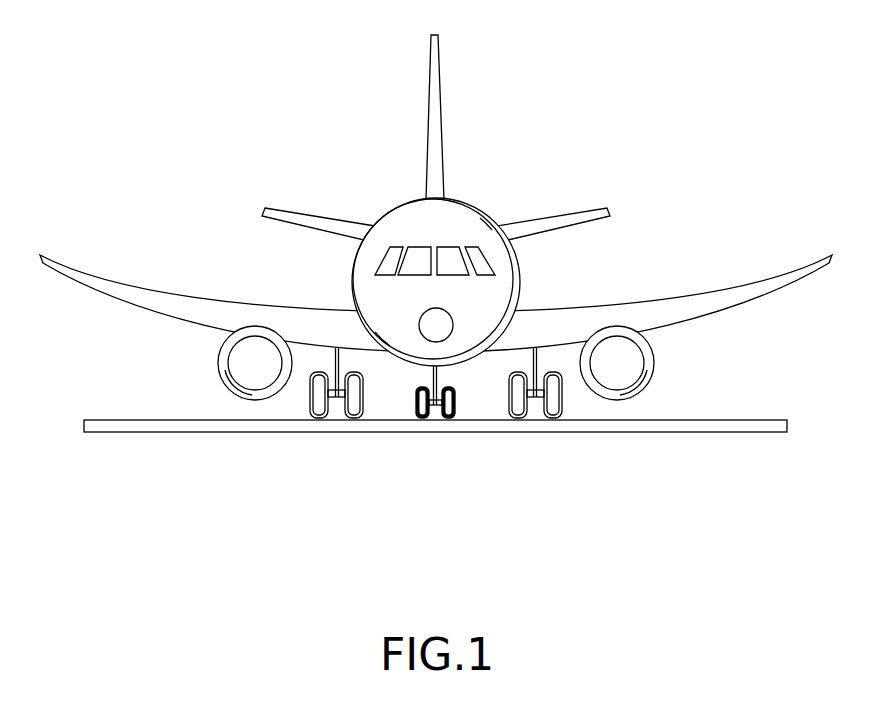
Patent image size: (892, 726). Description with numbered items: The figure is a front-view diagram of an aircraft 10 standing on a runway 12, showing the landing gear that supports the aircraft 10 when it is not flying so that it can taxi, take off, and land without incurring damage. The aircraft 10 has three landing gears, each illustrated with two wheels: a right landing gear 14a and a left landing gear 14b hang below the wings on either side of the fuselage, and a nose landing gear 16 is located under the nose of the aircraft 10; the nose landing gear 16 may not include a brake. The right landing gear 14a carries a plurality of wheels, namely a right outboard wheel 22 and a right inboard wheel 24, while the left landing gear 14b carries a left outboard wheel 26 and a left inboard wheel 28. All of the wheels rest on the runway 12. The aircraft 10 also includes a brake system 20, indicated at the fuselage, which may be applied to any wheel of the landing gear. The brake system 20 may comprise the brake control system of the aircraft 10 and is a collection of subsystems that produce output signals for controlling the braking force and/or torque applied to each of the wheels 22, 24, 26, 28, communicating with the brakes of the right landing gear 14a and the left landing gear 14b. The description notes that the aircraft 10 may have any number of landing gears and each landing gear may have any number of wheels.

The aircraft 10 is at (436, 265).
The runway 12 is at (748, 420).
The right landing gear 14a is at (329, 428).
The left landing gear 14b is at (548, 428).
The nose landing gear 16 is at (438, 407).
The brake system 20 is at (435, 237).
The right outboard (ROB) wheel 22 is at (318, 403).
The right inboard (RIB) wheel 24 is at (360, 405).
The left outboard (LOB) wheel 26 is at (562, 405).
The left inboard (LIB) wheel 28 is at (497, 404).